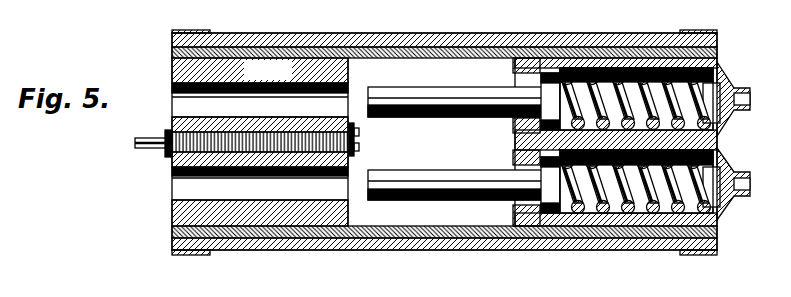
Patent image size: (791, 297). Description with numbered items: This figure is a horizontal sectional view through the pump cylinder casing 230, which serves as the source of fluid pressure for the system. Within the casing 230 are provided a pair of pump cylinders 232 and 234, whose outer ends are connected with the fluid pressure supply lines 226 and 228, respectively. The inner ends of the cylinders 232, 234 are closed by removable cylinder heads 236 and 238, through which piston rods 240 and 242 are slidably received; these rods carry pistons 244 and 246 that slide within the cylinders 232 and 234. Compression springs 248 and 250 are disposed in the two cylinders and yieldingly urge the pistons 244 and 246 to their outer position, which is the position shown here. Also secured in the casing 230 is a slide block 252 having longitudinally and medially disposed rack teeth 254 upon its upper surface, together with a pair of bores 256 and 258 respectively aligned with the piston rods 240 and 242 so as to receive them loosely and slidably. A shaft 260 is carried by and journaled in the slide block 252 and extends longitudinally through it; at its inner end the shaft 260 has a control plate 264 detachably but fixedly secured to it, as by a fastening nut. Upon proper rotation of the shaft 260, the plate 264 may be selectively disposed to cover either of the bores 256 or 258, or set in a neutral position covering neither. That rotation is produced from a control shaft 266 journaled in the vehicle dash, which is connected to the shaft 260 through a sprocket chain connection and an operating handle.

The fluid pressure supply line 226 is at (737, 89).
The fluid pressure supply line 228 is at (736, 198).
The pump cylinder casing 230 is at (416, 44).
The pump cylinder 232 is at (593, 68).
The pump cylinder 234 is at (596, 216).
The removable cylinder head 236 is at (598, 95).
The removable cylinder head 238 is at (525, 210).
The piston rod 240 is at (450, 87).
The piston rod 242 is at (445, 169).
The piston 244 is at (551, 72).
The piston 246 is at (548, 212).
The compression spring 248 is at (638, 74).
The compression spring 250 is at (653, 210).
The slide block 252 is at (260, 70).
The rack teeth 254 is at (211, 142).
The bore 256 is at (181, 104).
The bore 258 is at (181, 189).
The shaft 260 is at (151, 152).
The control plate 264 is at (354, 126).
The control shaft 266 is at (354, 152).